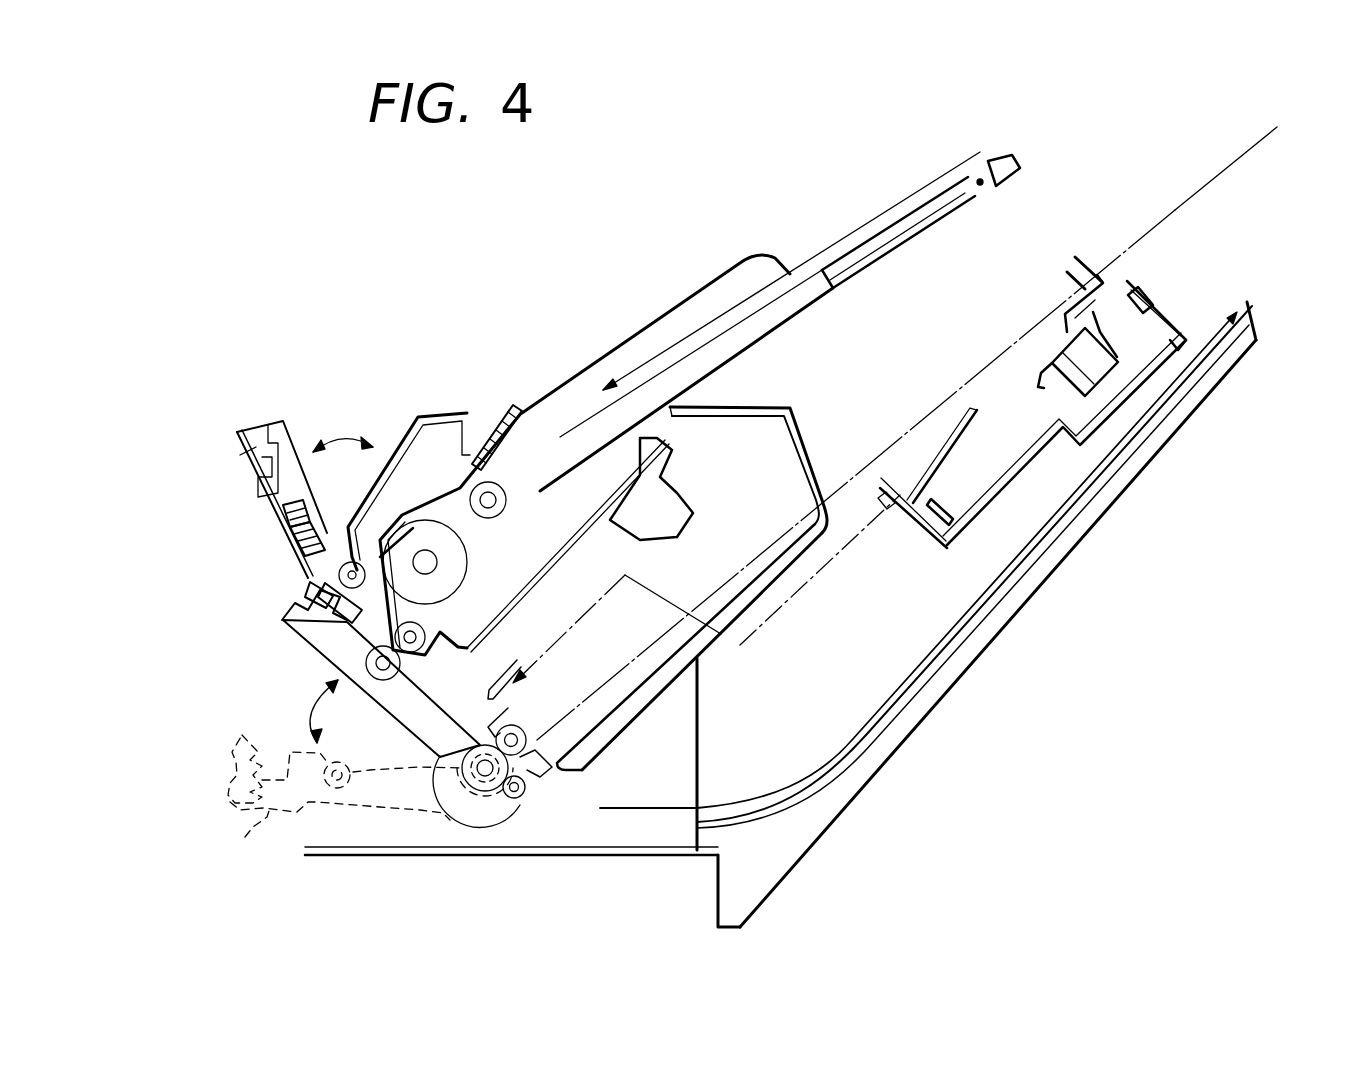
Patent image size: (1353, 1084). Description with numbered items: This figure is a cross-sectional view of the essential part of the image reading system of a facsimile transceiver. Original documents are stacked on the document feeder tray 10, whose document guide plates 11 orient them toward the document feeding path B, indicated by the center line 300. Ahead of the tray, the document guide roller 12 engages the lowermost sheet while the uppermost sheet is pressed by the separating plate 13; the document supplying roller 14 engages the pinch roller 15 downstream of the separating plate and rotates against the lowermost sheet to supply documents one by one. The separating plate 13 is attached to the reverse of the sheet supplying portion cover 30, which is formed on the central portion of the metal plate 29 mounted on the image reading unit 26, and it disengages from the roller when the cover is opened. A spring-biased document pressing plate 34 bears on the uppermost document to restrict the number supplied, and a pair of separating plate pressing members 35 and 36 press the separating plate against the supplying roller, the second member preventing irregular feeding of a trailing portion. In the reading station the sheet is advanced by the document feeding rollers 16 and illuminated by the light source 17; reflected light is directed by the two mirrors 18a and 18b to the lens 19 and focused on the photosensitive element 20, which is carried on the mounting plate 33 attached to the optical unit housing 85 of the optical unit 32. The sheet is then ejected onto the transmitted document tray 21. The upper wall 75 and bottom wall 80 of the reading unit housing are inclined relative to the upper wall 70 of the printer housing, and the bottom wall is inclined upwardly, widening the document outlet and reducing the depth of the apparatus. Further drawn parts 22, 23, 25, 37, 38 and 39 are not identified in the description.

The document feeder tray 10 is at (1016, 152).
The document guide plates 11 is at (742, 259).
The document guide roller 12 is at (512, 514).
The separating plate 13 is at (308, 463).
The document supplying roller 14 is at (435, 530).
The pinch roller 15 is at (350, 570).
The document feeding rollers 16 is at (413, 652).
The light source 17 is at (487, 663).
The mirror 18a is at (1072, 281).
The mirror 18b is at (947, 507).
The lens 19 is at (1107, 357).
The photosensitive element 20 is at (1160, 288).
The transmitted document tray 21 is at (1233, 363).
The lever 22 is at (397, 703).
The pressure roller 23 is at (515, 792).
The support 25 is at (283, 640).
The image reading unit 26 is at (720, 407).
The metal plate 29 is at (385, 457).
The sheet supplying portion cover 30 is at (240, 455).
The optical unit 32 is at (1085, 285).
The mounting plate 33 is at (1130, 288).
The document pressing plate 34 is at (480, 407).
The separating plate pressing member 35 is at (280, 513).
The separating plate pressing member 36 is at (290, 553).
The seal 37 is at (307, 582).
The sheet guide 38 is at (573, 773).
The clip 39 is at (676, 484).
The upper wall 70 is at (665, 858).
The upper wall 75 is at (597, 515).
The bottom wall 80 is at (712, 648).
The optical unit housing 85 is at (1113, 417).
The center line 300 is at (1243, 157).